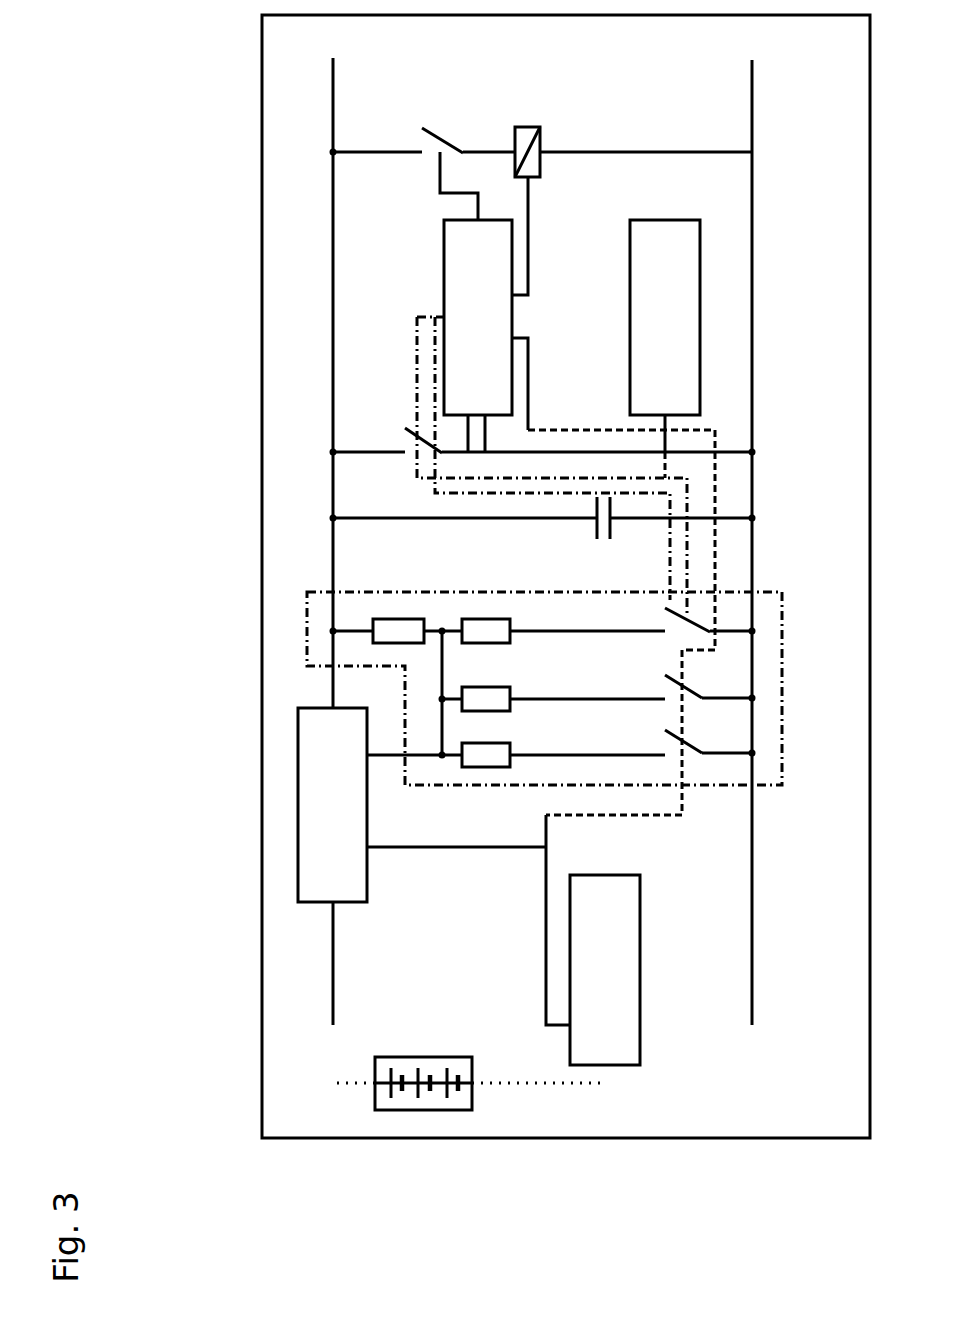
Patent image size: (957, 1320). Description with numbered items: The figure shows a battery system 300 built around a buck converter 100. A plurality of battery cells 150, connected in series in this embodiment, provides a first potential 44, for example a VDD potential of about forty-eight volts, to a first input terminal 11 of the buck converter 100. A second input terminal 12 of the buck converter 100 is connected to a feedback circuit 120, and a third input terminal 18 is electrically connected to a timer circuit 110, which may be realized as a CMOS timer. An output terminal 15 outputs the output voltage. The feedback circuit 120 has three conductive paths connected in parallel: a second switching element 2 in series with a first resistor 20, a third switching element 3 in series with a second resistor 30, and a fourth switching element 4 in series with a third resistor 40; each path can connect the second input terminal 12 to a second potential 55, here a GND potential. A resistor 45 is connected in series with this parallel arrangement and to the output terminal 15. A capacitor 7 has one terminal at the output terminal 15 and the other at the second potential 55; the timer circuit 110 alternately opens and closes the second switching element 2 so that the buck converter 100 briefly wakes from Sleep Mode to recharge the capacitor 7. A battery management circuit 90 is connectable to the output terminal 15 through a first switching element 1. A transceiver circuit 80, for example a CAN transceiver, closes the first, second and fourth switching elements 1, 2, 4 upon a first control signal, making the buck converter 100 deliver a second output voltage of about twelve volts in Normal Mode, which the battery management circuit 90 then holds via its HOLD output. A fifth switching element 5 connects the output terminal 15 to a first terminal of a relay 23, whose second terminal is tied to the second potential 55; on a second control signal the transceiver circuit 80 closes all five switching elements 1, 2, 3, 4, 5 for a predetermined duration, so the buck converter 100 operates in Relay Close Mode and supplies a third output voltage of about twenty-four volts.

The battery system 300 is at (262, 105).
The fifth switching element 5 is at (420, 145).
The relay 23 is at (527, 125).
The battery management circuit 90 is at (444, 258).
The transceiver circuit 80 is at (700, 273).
The first switching element 1 is at (367, 450).
The capacitor 7 is at (597, 525).
The resistor 45 is at (400, 625).
The third resistor 40 is at (475, 625).
The second resistor 30 is at (500, 703).
The first resistor 20 is at (475, 757).
The feedback circuit 120 is at (307, 630).
The output terminal 15 is at (333, 688).
The buck converter 100 is at (298, 750).
The first input terminal 11 is at (333, 963).
The first potential 44 is at (333, 1022).
The second input terminal 12 is at (390, 760).
The third input terminal 18 is at (420, 850).
The timer circuit 110 is at (640, 888).
The second potential 55 is at (756, 848).
The second switching element 2 is at (690, 758).
The third switching element 3 is at (690, 703).
The fourth switching element 4 is at (673, 625).
The plurality of battery cells 150 is at (400, 1110).